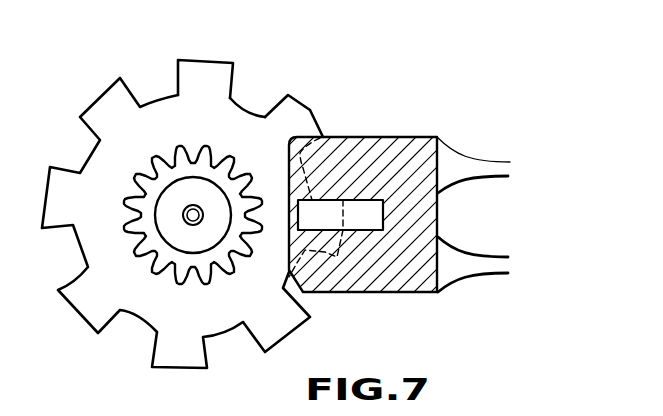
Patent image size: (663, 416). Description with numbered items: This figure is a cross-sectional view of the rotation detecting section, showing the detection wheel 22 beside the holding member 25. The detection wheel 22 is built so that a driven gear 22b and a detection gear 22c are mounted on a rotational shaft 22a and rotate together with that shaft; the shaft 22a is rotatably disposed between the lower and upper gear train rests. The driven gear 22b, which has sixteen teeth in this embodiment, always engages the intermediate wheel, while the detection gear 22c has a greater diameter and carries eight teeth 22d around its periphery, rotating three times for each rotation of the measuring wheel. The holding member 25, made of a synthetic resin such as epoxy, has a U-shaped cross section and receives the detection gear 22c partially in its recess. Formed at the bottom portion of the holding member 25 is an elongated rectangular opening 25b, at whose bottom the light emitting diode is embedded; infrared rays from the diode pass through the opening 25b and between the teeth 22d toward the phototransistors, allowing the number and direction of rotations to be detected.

The detection wheel 22 is at (204, 195).
The rotational shaft 22a is at (188, 218).
The driven gear 22b is at (177, 266).
The detection gear 22c is at (243, 108).
The teeth 22d is at (207, 70).
The holding member 25 is at (363, 215).
The elongated rectangular opening 25b is at (363, 223).